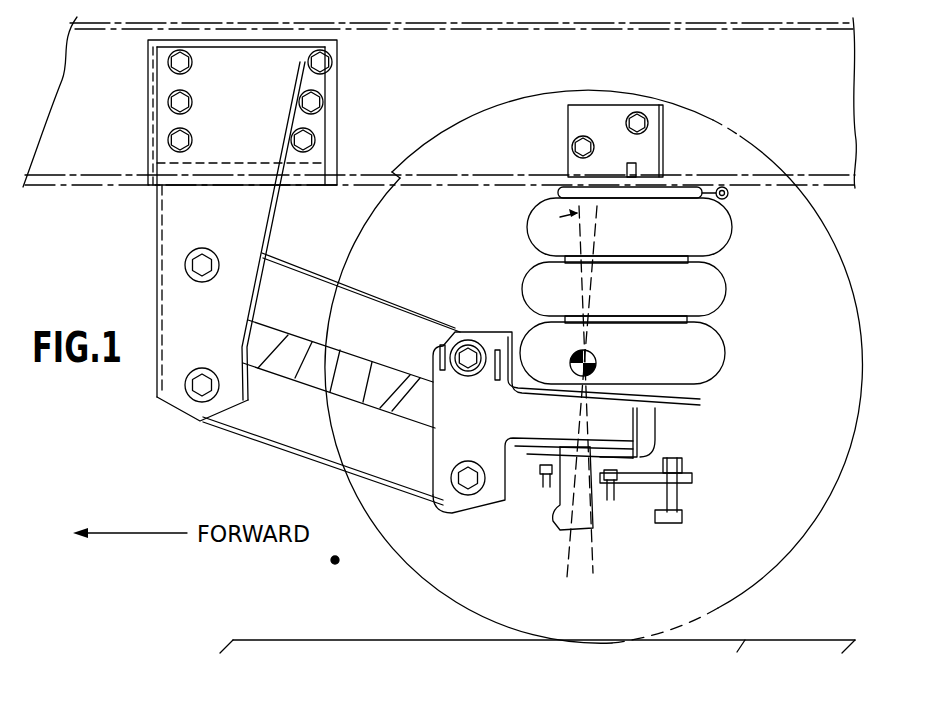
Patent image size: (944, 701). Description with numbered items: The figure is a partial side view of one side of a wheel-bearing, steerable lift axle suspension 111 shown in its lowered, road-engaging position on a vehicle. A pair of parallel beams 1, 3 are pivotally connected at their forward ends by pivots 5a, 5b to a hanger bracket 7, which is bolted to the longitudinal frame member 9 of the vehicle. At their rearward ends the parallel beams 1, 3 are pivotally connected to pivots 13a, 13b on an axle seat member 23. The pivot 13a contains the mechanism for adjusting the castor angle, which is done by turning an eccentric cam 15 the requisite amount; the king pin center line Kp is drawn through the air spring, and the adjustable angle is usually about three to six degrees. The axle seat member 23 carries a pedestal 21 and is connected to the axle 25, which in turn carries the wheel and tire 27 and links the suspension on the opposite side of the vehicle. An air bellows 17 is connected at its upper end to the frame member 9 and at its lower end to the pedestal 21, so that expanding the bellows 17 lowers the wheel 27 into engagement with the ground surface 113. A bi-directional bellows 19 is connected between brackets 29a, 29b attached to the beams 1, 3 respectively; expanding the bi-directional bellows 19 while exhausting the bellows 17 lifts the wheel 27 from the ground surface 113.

The parallel beam 1 is at (331, 379).
The parallel beam 3 is at (331, 379).
The pivot 5a is at (185, 266).
The pivot 5b is at (185, 381).
The hanger bracket 7 is at (210, 230).
The longitudinal frame member 9 is at (402, 101).
The pivot 13a is at (470, 356).
The pivot 13b is at (470, 487).
The eccentric cam 15 is at (466, 344).
The air bellows 17 is at (648, 382).
The bi-directional bellows 19 is at (325, 362).
The pedestal 21 is at (697, 408).
The axle seat member 23 is at (497, 421).
The axle 25 is at (560, 522).
The wheel 27 is at (790, 530).
The bracket 29a is at (385, 392).
The bracket 29b is at (285, 368).
The lift axle suspension 111 is at (333, 562).
The ground surface 113 is at (549, 675).
The king pin center line Kp is at (598, 213).